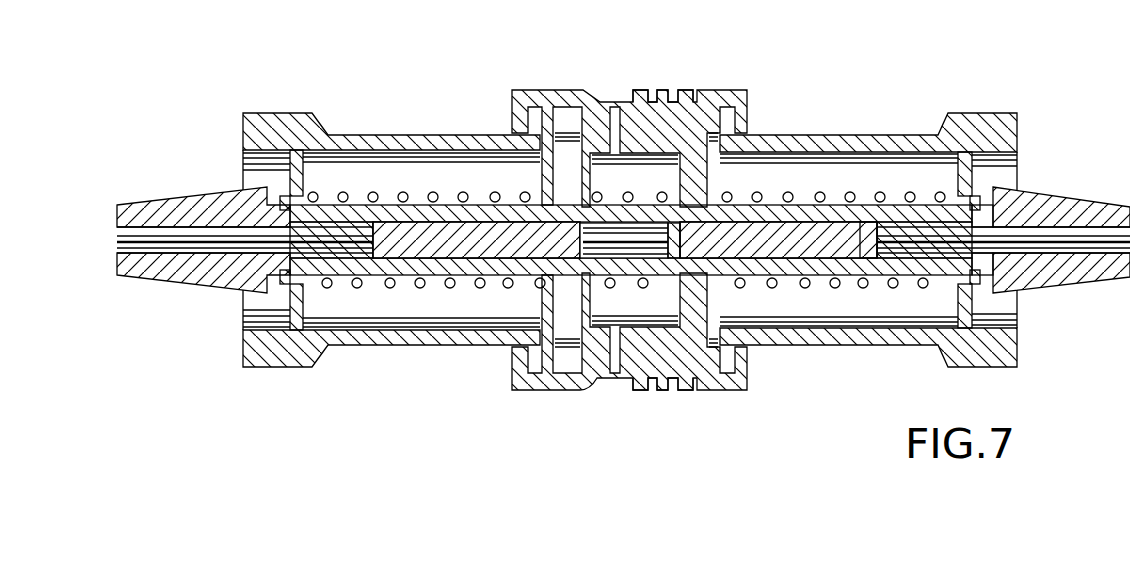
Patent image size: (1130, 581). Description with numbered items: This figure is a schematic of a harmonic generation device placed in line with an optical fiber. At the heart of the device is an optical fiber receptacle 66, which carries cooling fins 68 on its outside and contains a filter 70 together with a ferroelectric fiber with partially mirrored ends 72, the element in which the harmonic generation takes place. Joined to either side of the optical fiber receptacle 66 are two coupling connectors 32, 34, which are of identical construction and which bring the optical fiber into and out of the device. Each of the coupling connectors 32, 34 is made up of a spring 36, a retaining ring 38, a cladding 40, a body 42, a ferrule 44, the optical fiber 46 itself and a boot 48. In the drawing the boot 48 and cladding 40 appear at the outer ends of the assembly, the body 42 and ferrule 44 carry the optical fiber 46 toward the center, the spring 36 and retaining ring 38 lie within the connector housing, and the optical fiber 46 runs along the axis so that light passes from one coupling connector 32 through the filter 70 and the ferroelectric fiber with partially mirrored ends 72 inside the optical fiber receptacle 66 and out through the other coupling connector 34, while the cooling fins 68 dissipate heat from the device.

The coupling connector 32 is at (447, 133).
The coupling connector 34 is at (767, 134).
The spring 36 is at (440, 182).
The retaining ring 38 is at (978, 282).
The cladding 40 is at (221, 230).
The body 42 is at (805, 210).
The ferrule 44 is at (862, 226).
The optical fiber 46 is at (541, 221).
The boot 48 is at (1073, 191).
The optical fiber receptacle 66 is at (553, 90).
The cooling fins 68 is at (676, 91).
The filter 70 is at (674, 246).
The ferroelectric fiber with partially mirrored ends 72 is at (600, 242).